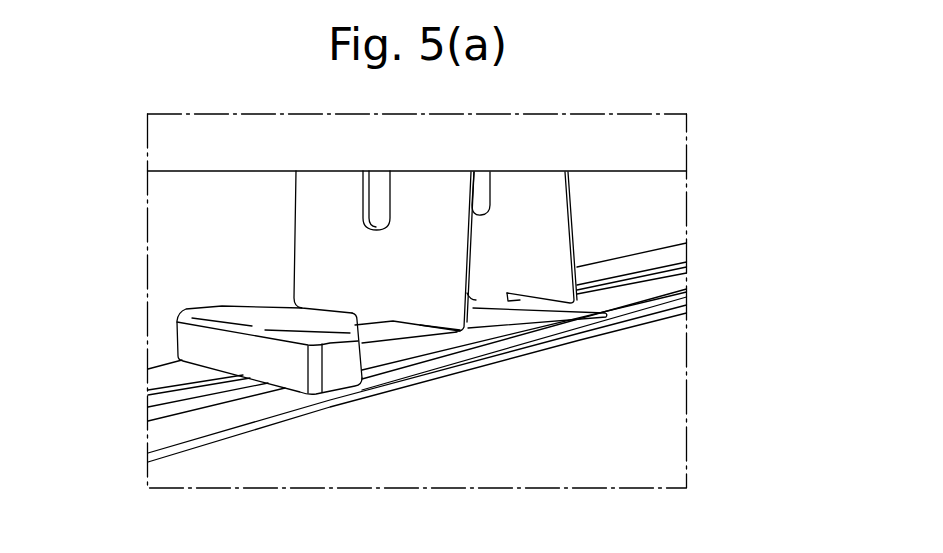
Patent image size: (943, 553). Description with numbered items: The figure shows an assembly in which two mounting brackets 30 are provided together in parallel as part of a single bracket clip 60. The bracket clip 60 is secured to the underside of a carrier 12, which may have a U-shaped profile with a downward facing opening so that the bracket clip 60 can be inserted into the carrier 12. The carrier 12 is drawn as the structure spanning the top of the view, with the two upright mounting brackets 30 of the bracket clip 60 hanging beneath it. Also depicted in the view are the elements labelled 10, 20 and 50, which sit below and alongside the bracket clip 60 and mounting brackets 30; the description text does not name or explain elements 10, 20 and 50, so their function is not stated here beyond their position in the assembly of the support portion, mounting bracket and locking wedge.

The base 10 is at (613, 428).
The carrier 12 is at (595, 144).
The rail 20 is at (642, 293).
The mounting bracket 30 is at (323, 235).
The plate 50 is at (485, 333).
The bracket clip 60 is at (588, 218).